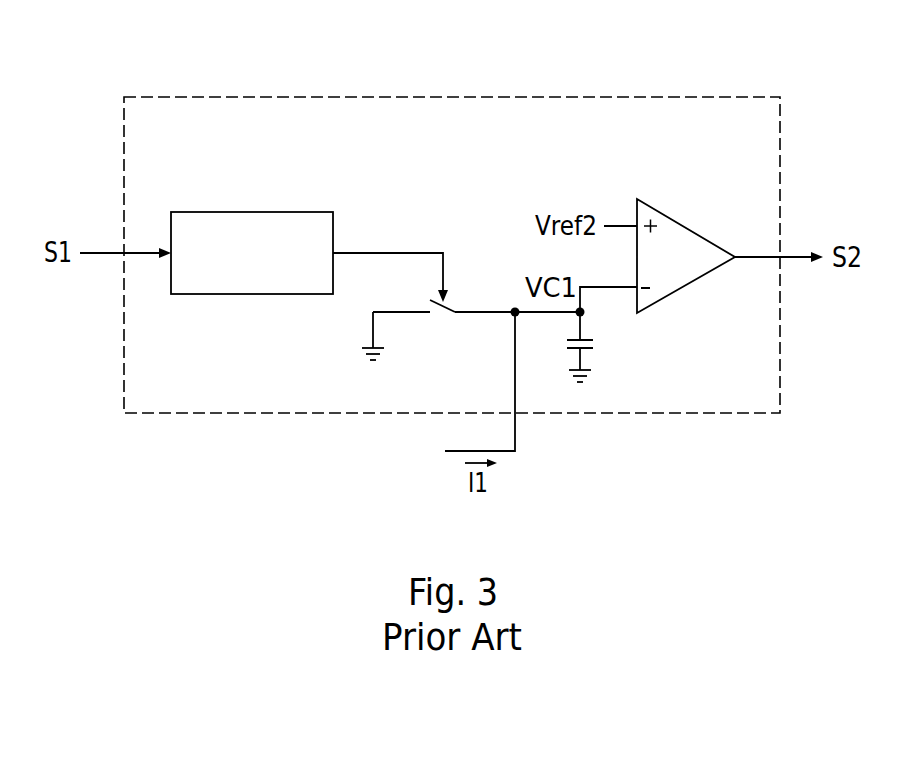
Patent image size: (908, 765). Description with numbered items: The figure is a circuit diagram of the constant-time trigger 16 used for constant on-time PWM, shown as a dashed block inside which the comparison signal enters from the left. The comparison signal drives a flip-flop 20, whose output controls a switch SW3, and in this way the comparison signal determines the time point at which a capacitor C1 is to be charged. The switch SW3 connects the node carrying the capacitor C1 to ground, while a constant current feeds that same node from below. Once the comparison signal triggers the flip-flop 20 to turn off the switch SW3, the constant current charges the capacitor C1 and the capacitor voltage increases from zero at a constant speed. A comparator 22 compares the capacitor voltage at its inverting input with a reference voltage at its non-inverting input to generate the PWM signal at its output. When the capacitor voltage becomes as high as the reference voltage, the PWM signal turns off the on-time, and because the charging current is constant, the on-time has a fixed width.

The constant-time trigger 16 is at (450, 97).
The flip-flop 20 is at (250, 212).
The comparator 22 is at (687, 227).
The switch SW3 is at (471, 330).
The capacitor C1 is at (600, 347).